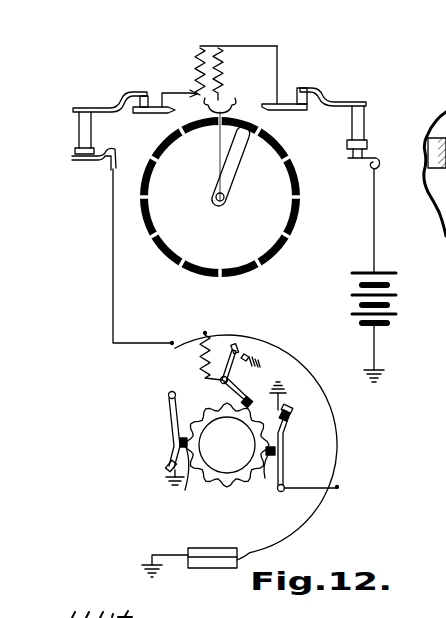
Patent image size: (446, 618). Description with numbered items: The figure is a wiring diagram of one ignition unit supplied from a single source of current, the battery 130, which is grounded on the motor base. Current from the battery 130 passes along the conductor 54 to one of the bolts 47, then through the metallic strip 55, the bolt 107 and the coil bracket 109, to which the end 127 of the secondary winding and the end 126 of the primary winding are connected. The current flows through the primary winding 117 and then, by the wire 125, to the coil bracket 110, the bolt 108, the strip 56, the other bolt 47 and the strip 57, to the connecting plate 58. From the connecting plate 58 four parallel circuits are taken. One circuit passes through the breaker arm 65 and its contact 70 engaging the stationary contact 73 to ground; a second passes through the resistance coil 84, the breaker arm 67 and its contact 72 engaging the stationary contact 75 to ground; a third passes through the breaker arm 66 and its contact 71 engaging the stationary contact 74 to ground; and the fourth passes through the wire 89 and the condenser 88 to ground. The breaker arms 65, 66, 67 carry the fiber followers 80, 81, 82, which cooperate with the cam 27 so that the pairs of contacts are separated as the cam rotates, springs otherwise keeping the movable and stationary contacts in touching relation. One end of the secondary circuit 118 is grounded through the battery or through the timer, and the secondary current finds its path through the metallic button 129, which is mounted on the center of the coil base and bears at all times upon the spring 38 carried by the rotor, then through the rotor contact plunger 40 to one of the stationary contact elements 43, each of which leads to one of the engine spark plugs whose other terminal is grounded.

The cam 27 is at (213, 432).
The spring 38 is at (222, 190).
The plunger 40 is at (247, 135).
The stationary contact elements 43 is at (300, 193).
The bolts 47 is at (79, 129).
The conductor 54 is at (372, 236).
The metallic strip 55 is at (320, 99).
The strip 56 is at (100, 107).
The strip 57 is at (98, 168).
The connecting plate 58 is at (292, 357).
The breaker arm 65 is at (174, 420).
The breaker arm 66 is at (277, 462).
The breaker arm 67 is at (229, 360).
The contact 70 is at (168, 462).
The contact 71 is at (293, 416).
The contact 72 is at (238, 346).
The stationary contact 73 is at (173, 470).
The stationary contact 74 is at (286, 413).
The stationary contact 75 is at (246, 356).
The fiber follower 80 is at (179, 472).
The fiber follower 81 is at (262, 472).
The fiber follower 82 is at (267, 400).
The resistance coil 84 is at (200, 350).
The condenser 88 is at (218, 552).
The wire 89 is at (290, 542).
The bolt 107 is at (297, 100).
The bolt 108 is at (148, 100).
The coil bracket 109 is at (292, 110).
The coil bracket 110 is at (147, 113).
The primary winding 117 is at (195, 62).
The secondary circuit 118 is at (225, 70).
The wire 125 is at (180, 93).
The primary winding end 126 is at (206, 46).
The secondary winding end 127 is at (243, 44).
The metallic button 129 is at (235, 105).
The battery 130 is at (362, 285).